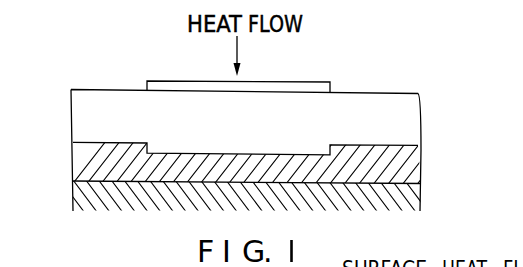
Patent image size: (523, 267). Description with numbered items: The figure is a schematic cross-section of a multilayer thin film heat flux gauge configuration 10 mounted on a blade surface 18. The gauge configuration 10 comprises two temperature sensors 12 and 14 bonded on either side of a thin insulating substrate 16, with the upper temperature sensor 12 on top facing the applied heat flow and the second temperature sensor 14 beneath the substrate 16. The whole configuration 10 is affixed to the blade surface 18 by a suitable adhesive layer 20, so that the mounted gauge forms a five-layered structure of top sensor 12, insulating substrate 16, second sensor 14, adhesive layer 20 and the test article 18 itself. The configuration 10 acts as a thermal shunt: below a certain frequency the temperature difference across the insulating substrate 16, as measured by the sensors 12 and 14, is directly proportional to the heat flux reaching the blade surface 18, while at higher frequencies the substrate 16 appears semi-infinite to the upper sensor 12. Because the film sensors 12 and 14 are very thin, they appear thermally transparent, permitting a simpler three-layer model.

The multilayer heat flux gauge configuration 10 is at (120, 76).
The upper temperature sensor 12 is at (203, 55).
The second temperature sensor 14 is at (163, 142).
The insulating substrate 16 is at (248, 130).
The blade surface 18 is at (405, 197).
The adhesive layer 20 is at (395, 168).